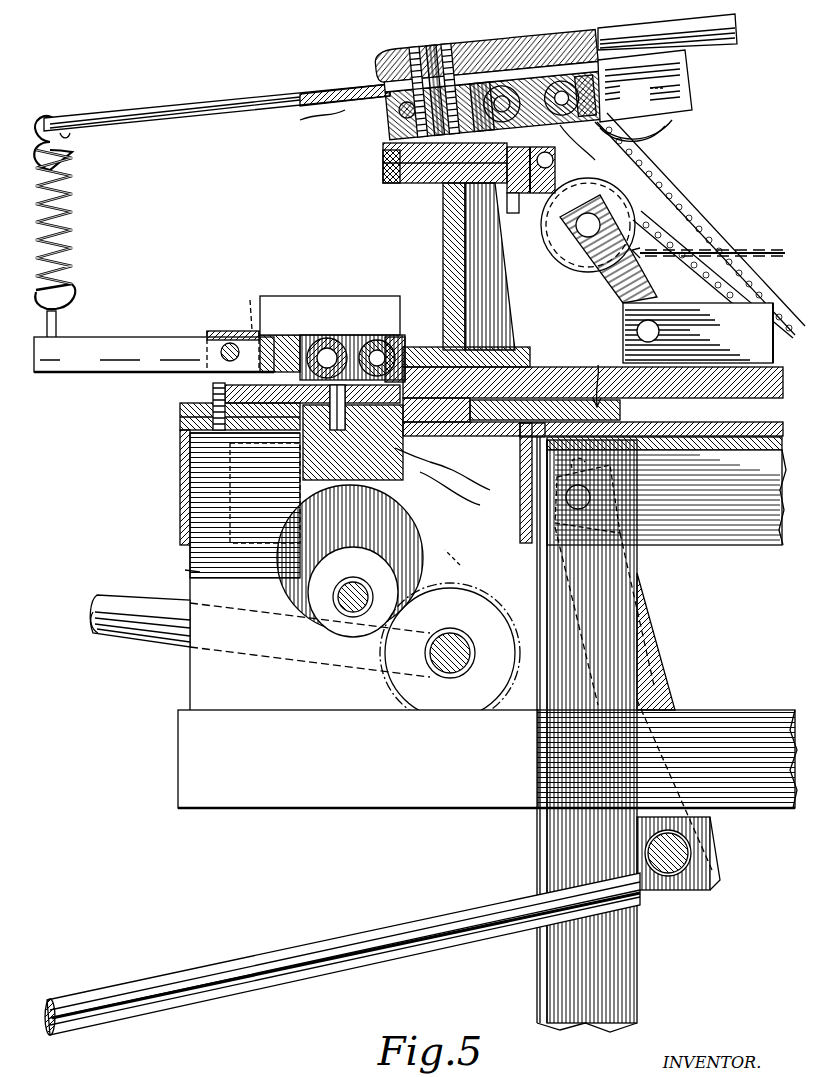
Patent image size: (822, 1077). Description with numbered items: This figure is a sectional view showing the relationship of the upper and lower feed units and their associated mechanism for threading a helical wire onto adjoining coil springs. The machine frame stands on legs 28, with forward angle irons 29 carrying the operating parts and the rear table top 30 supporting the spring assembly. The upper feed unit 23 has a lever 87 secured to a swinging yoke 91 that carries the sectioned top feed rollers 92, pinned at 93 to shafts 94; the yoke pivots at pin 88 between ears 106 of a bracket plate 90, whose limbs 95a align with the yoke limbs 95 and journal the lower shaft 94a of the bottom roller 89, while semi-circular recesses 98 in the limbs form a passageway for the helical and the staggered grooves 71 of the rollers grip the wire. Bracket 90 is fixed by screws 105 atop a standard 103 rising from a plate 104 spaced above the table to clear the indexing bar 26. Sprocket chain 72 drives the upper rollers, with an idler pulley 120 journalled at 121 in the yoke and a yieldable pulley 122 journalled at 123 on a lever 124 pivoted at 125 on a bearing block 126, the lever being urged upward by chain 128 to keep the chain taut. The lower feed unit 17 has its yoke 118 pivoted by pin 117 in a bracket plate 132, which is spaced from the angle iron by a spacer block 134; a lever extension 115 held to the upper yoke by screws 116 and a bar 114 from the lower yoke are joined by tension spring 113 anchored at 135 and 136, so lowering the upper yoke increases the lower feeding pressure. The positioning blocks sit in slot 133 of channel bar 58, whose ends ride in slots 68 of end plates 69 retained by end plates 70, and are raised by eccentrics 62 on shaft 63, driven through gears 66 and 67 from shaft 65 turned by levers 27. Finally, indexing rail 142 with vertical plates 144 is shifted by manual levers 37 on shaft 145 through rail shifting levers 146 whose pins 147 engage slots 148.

The lower feed unit 17 is at (322, 326).
The upper feed unit 23 is at (500, 70).
The indexing bar 26 is at (599, 375).
The lever 27 is at (114, 636).
The leg 28 is at (630, 958).
The angle iron 29 is at (180, 476).
The table top 30 is at (780, 410).
The manual lever 37 is at (195, 965).
The channel shaped bar 58 is at (450, 492).
The eccentric 62 is at (295, 570).
The eccentric shaft 63 is at (350, 612).
The lever shaft 65 is at (455, 653).
The gear 66 is at (490, 606).
The gear 67 is at (325, 630).
The slot 68 is at (440, 516).
The end plate 69 is at (177, 571).
The end plate 70 is at (461, 565).
The staggered groove 71 is at (310, 340).
The sprocket chain 72 is at (698, 222).
The lever 87 is at (738, 30).
The pivot pin 88 is at (396, 114).
The bottom roller 89 is at (556, 170).
The bracket plate 90 is at (383, 158).
The swinging yoke 91 is at (440, 58).
The top feed roller 92 is at (360, 340).
The pin 93 is at (395, 338).
The shaft 94 is at (528, 100).
The lower shaft 94a is at (515, 213).
The limb 95 is at (668, 84).
The limb 95a is at (340, 495).
The semi-circular recess 98 is at (585, 146).
The standard 103 is at (443, 236).
The plate 104 is at (548, 347).
The screw 105 is at (180, 414).
The ear 106 is at (290, 214).
The spring 113 is at (78, 208).
The bar 114 is at (135, 338).
The lever extension 115 is at (160, 108).
The screw 116 is at (418, 58).
The pin 117 is at (230, 343).
The yoke 118 is at (280, 335).
The idler pulley 120 is at (672, 126).
The journal 121 is at (685, 70).
The yieldable pulley 122 is at (560, 240).
The journal 123 is at (588, 235).
The lever 124 is at (620, 300).
The pivot 125 is at (655, 322).
The bearing block 126 is at (760, 315).
The chain 128 is at (770, 248).
The bracket plate 132 is at (225, 392).
The longitudinal slot 133 is at (454, 471).
The spacer block 134 is at (213, 403).
The anchor 135 is at (56, 325).
The anchor 136 is at (60, 118).
The rail 142 is at (570, 400).
The vertical plate 144 is at (660, 438).
The shaft 145 is at (692, 853).
The rail shifting lever 146 is at (650, 660).
The pin 147 is at (578, 522).
The slot 148 is at (615, 480).